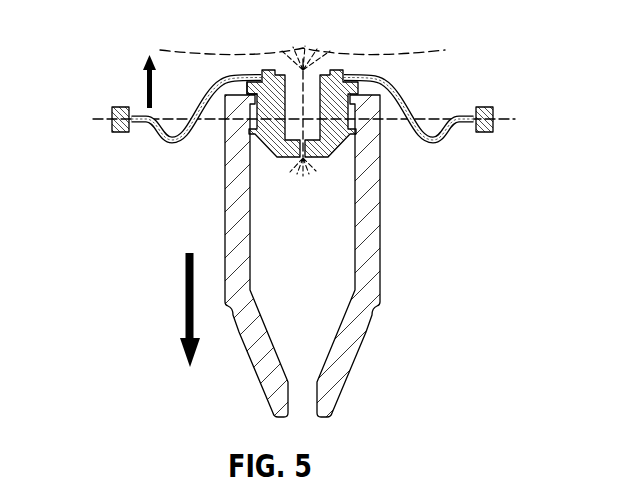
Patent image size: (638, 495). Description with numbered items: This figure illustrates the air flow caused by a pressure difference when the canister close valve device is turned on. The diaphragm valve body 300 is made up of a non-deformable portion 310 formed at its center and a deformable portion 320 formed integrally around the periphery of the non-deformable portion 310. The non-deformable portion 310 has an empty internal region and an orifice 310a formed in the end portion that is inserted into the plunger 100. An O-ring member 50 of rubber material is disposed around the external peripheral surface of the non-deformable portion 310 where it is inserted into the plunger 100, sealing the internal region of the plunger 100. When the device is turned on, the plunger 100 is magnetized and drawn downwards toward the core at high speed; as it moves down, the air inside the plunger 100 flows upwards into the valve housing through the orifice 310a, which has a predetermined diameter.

The O-ring member 50 is at (350, 134).
The plunger 100 is at (367, 228).
The diaphragm valve body 300 is at (161, 130).
The non-deformable portion 310 is at (257, 131).
The orifice 310a is at (297, 138).
The deformable portion 320 is at (168, 143).